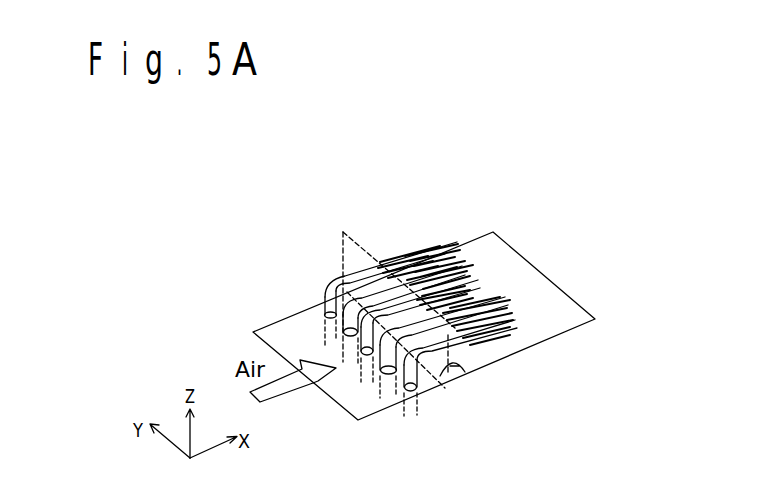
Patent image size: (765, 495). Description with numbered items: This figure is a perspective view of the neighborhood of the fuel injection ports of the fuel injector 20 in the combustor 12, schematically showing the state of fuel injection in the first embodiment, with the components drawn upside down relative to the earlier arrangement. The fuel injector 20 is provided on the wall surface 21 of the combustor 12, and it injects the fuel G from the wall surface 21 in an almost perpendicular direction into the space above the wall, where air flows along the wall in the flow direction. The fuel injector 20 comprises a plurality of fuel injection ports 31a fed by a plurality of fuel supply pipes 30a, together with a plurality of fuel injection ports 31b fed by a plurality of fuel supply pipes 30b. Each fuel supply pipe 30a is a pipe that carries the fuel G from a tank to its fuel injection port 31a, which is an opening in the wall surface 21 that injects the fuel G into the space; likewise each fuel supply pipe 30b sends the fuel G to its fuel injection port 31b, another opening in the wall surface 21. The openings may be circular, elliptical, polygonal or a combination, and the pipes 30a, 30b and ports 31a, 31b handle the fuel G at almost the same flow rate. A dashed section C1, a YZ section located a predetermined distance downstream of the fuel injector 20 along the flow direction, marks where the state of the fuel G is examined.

The combustor 12 is at (235, 185).
The fuel injector 20 is at (306, 311).
The wall surface 21 is at (552, 290).
The fuel supply pipe 30a is at (412, 388).
The fuel supply pipe 30b is at (386, 374).
The fuel injection port 31a is at (463, 374).
The fuel injection port 31b is at (402, 373).
The fuel G is at (326, 292).
The section C1 is at (450, 368).